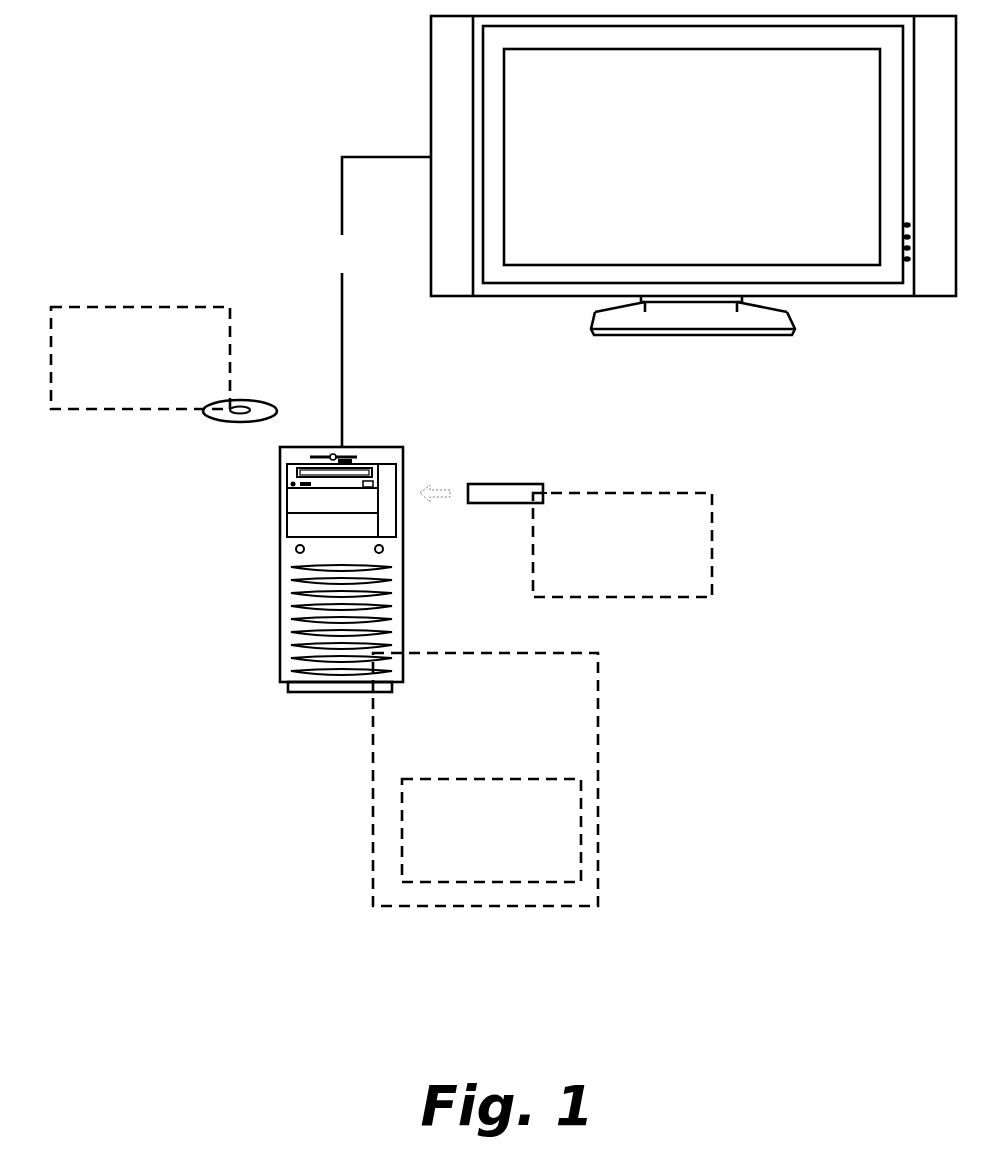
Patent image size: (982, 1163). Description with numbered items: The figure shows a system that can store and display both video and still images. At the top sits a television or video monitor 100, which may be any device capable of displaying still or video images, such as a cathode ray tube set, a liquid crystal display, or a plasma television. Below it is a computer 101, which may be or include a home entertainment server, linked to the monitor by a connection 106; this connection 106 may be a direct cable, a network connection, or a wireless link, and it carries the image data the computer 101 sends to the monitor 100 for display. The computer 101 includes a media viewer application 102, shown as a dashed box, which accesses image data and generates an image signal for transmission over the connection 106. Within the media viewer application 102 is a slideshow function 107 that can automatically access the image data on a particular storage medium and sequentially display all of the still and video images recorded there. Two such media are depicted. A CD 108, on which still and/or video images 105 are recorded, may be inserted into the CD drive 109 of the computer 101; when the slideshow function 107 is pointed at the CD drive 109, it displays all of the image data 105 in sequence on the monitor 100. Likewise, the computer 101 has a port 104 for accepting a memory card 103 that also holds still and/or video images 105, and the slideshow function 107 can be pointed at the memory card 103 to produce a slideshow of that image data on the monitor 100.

The television or video monitor 100 is at (693, 175).
The computer 101 is at (278, 645).
The media viewer application 102 is at (485, 779).
The memory card 103 is at (515, 493).
The port 104 is at (405, 487).
The still and/or video images 105 is at (381, 452).
The connection 106 is at (378, 302).
The slideshow function 107 is at (491, 830).
The CD 108 is at (248, 400).
The CD drive 109 is at (290, 490).